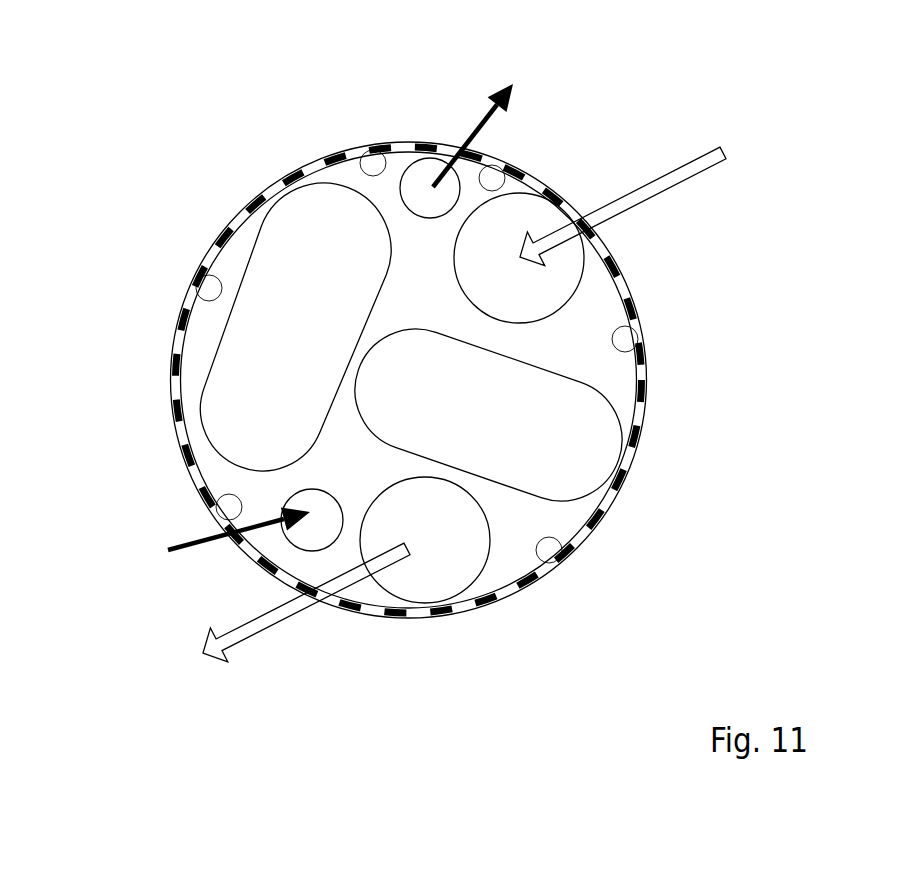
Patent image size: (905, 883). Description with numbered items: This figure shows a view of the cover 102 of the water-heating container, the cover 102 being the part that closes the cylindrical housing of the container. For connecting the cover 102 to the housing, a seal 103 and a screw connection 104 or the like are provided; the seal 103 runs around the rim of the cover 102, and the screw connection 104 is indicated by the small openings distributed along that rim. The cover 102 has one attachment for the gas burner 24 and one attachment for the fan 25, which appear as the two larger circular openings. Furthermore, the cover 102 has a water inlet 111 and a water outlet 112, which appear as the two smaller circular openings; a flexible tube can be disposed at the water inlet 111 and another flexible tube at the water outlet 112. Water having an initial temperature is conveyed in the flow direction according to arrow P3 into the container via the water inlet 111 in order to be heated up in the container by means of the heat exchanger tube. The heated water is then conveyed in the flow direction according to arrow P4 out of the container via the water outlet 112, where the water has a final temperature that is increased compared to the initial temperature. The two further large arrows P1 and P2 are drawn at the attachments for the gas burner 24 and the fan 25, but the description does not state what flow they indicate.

The cover 102 is at (196, 178).
The seal 103 is at (598, 522).
The screw connection 104 is at (213, 292).
The water inlet 111 is at (300, 540).
The water outlet 112 is at (417, 182).
The gas burner 24 is at (553, 285).
The fan 25 is at (455, 572).
The force direction P1 is at (623, 190).
The force direction P2 is at (306, 615).
The arrow P3 is at (216, 528).
The arrow P4 is at (502, 132).